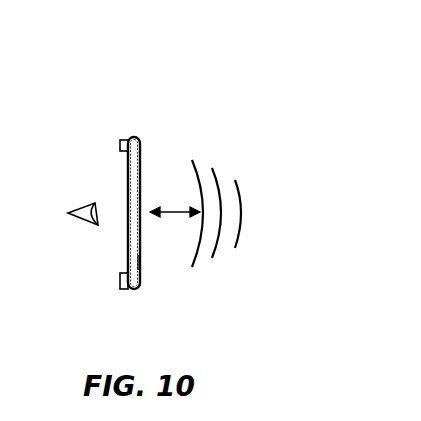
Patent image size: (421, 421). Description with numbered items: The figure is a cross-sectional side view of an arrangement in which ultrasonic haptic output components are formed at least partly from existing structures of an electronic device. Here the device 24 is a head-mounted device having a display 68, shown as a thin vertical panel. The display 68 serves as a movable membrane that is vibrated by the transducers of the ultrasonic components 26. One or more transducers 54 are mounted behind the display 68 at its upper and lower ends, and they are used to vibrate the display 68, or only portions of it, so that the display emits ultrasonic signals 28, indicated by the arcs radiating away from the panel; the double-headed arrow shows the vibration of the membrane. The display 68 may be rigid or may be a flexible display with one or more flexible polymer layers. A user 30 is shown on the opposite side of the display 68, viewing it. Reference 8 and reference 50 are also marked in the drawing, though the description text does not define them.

The electronic device / system 8 is at (210, 62).
The device 24 is at (133, 297).
The ultrasonic components 26 is at (134, 127).
The ultrasonic signals 28 is at (213, 148).
The user 30 is at (80, 219).
The display layer 50 is at (136, 260).
The transducers 54 is at (120, 144).
The display 68 is at (141, 160).